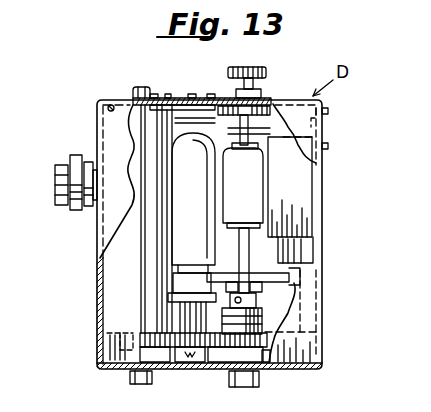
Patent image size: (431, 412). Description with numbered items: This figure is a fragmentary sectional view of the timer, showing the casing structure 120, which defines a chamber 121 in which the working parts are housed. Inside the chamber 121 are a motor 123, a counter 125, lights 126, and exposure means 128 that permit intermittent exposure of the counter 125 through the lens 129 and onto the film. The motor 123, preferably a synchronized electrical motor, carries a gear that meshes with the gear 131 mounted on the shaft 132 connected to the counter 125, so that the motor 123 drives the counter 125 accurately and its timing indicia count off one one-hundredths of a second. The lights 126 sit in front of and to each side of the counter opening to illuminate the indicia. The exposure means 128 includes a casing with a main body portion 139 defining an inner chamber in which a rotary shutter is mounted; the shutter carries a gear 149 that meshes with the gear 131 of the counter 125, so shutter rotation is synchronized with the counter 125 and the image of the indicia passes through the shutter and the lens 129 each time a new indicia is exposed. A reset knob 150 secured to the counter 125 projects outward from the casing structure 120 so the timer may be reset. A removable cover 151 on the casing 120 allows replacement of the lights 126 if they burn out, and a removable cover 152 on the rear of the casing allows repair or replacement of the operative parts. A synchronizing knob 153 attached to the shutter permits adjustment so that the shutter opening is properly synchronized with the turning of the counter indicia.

The casing structure 120 is at (108, 121).
The chamber 121 is at (194, 114).
The motor 123 is at (306, 278).
The counter 125 is at (256, 174).
The lights 126 is at (182, 238).
The exposure means 128 is at (116, 283).
The lens 129 is at (60, 168).
The gear 131 is at (237, 348).
The shaft 132 is at (251, 283).
The main body portion 139 is at (132, 308).
The gear 149 is at (163, 348).
The reset knob 150 is at (263, 67).
The removable cover 151 is at (182, 98).
The removable cover 152 is at (320, 200).
The synchronizing knob 153 is at (140, 86).